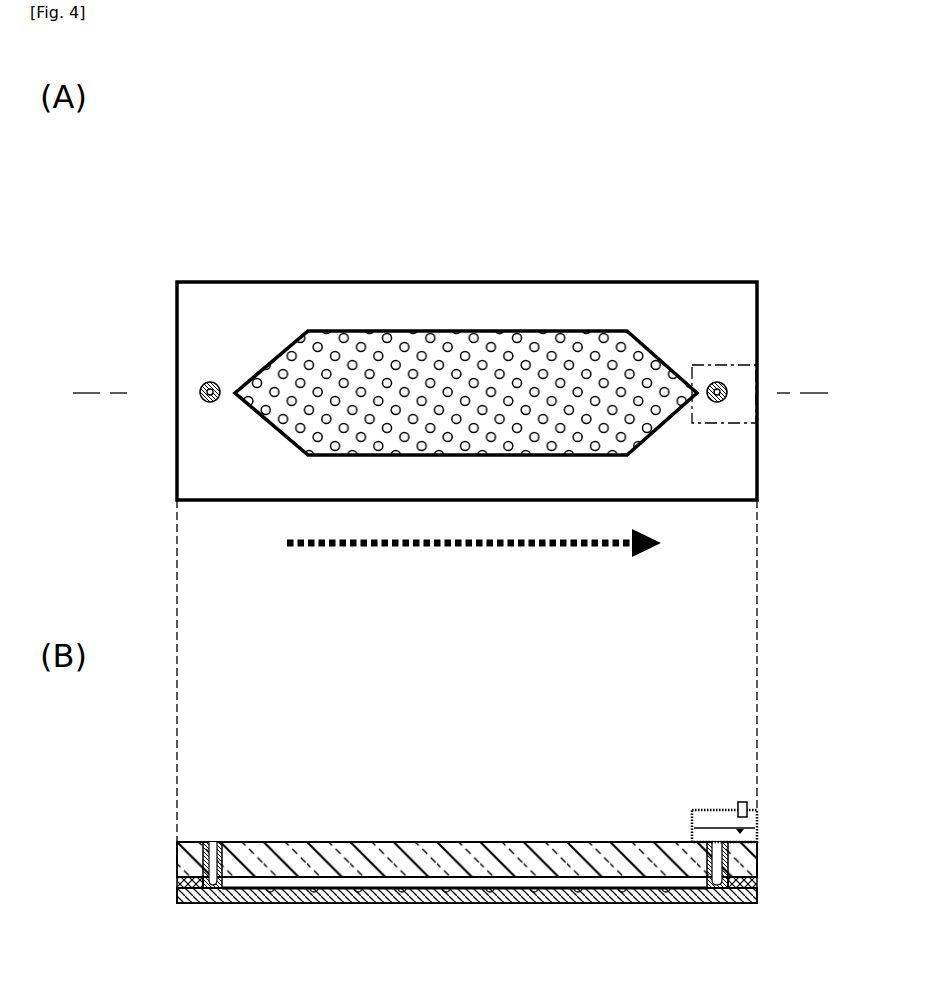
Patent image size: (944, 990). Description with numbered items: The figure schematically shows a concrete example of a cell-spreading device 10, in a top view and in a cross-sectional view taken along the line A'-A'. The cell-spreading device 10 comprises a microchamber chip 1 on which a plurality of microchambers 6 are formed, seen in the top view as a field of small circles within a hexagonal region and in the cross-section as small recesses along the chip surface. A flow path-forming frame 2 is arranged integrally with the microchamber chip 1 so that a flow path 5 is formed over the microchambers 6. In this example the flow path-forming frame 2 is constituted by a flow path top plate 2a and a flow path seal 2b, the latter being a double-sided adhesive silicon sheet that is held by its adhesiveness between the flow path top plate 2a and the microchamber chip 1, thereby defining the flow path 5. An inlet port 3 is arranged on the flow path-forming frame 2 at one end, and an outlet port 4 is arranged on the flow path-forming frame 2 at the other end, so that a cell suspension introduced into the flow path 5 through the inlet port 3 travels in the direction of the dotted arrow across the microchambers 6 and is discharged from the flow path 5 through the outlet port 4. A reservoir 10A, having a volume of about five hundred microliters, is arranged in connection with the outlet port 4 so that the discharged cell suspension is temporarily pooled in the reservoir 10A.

The cell-spreading device 10 is at (430, 240).
The reservoir 10A is at (745, 365).
The microchamber chip 1 is at (361, 332).
The flow path-forming frame 2 is at (447, 854).
The flow path top plate 2a is at (177, 868).
The flow path seal 2b is at (468, 904).
The inlet port 3 is at (198, 396).
The outlet port 4 is at (729, 394).
The flow path 5 is at (427, 887).
The microchamber 6 is at (563, 332).